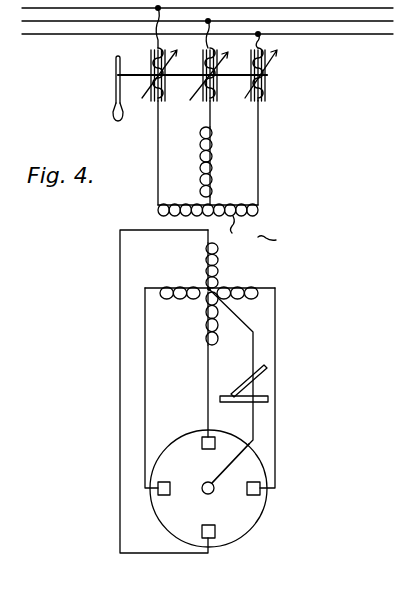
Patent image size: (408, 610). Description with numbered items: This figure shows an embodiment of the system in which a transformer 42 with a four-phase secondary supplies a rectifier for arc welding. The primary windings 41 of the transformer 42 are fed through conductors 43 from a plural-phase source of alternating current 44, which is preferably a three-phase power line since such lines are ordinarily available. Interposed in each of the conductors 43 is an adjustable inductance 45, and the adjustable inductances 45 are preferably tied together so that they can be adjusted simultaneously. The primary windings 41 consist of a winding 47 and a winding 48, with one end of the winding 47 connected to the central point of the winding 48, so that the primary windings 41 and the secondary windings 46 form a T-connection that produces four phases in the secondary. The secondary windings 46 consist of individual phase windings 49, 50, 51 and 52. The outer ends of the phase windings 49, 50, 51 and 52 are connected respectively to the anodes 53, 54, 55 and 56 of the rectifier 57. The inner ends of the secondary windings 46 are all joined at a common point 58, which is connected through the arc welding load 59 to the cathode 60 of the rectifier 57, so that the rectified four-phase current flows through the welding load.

The primary windings 41 is at (233, 183).
The transformer 42 is at (279, 237).
The conductors 43 is at (159, 128).
The plural-phase source of alternating current 44 is at (375, 8).
The adjustable inductance 45 is at (165, 95).
The secondary windings 46 is at (229, 303).
The winding 47 is at (205, 176).
The winding 48 is at (237, 234).
The phase winding 49 is at (204, 271).
The phase winding 50 is at (248, 300).
The phase winding 51 is at (204, 331).
The phase winding 52 is at (183, 301).
The anode 53 is at (214, 513).
The anode 54 is at (248, 490).
The anode 55 is at (202, 447).
The anode 56 is at (171, 487).
The rectifier 57 is at (247, 538).
The common point 58 is at (229, 274).
The arc welding load 59 is at (232, 391).
The cathode 60 is at (197, 482).